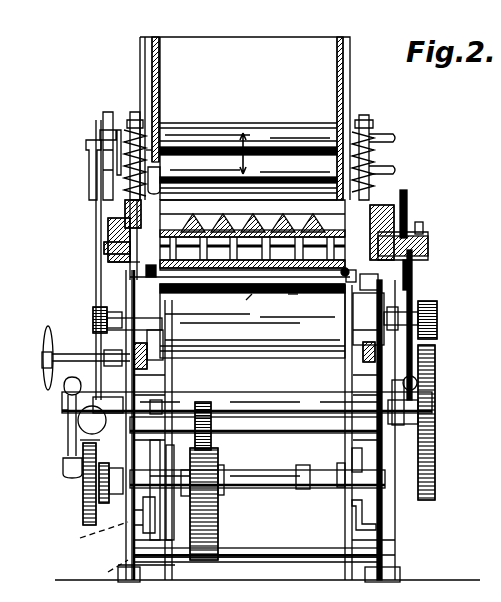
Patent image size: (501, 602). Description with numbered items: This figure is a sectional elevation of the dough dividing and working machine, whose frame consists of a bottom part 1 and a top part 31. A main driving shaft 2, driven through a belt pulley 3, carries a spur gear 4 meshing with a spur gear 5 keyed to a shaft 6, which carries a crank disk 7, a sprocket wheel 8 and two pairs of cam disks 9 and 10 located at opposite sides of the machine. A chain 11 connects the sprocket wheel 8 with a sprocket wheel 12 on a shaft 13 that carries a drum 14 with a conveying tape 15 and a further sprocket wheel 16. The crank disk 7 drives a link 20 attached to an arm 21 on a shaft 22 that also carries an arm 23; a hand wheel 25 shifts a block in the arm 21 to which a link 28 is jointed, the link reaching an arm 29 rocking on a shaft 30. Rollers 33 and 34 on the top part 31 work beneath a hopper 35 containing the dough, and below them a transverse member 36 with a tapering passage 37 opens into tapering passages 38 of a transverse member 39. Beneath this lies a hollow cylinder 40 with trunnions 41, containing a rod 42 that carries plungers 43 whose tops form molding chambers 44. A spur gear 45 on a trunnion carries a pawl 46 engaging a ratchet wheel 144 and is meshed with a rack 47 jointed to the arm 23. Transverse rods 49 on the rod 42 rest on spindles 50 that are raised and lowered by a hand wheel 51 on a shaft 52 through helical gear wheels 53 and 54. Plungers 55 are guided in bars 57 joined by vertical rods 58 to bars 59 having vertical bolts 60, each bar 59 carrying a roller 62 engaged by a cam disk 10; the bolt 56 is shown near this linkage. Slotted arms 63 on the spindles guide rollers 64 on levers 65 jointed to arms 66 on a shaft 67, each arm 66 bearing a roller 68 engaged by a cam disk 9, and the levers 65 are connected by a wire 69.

The bottom part 1 is at (388, 522).
The main driving shaft 2 is at (306, 433).
The belt pulley 3 is at (438, 414).
The spur gear 4 is at (204, 404).
The spur gear 5 is at (218, 460).
The shaft 6 is at (266, 470).
The crank disk 7 is at (83, 510).
The sprocket wheel 8 is at (104, 503).
The cam disks 9 is at (166, 452).
The cam disks 10 is at (150, 478).
The chain 11 is at (92, 444).
The sprocket wheel 12 is at (93, 312).
The shaft 13 is at (414, 310).
The drum 14 is at (310, 356).
The conveying tape 15 is at (292, 294).
The sprocket wheel 16 is at (437, 334).
The link 20 is at (66, 414).
The arm 21 is at (64, 388).
The shaft 22 is at (250, 394).
The arm 23 is at (404, 392).
The hand wheel 25 is at (104, 424).
The link 28 is at (100, 276).
The arm 29 is at (106, 126).
The shaft 30 is at (86, 152).
The top part 31 is at (126, 292).
The roller 33 is at (272, 122).
The roller 34 is at (286, 216).
The hopper 35 is at (282, 46).
The transverse member 36 is at (380, 196).
The tapering passage 37 is at (232, 230).
The tapering passages 38 is at (328, 218).
The transverse member 39 is at (108, 228).
The hollow cylinder 40 is at (222, 268).
The trunnions 41 is at (104, 247).
The rod 42 is at (188, 226).
The plungers 43 is at (220, 228).
The molding chambers 44 is at (263, 232).
The spur gear 45 is at (410, 268).
The pawl 46 is at (424, 226).
The rack 47 is at (408, 196).
The transverse rods 49 is at (108, 264).
The spindles 50 is at (154, 280).
The hand wheel 51 is at (44, 332).
The shaft 52 is at (72, 354).
The helical gear wheels 53 is at (146, 369).
The helical gear wheels 54 is at (368, 362).
The plungers 55 is at (125, 210).
The bolt 56 is at (148, 140).
The bars 57 is at (125, 125).
The vertical rods 58 is at (160, 402).
The bars 59 is at (143, 525).
The vertical bolts 60 is at (108, 571).
The roller 62 is at (92, 538).
The slotted arms 63 is at (378, 282).
The rollers 64 is at (350, 284).
The levers 65 is at (342, 276).
The arms 66 is at (352, 516).
The shaft 67 is at (290, 548).
The roller 68 is at (326, 484).
The wire 69 is at (254, 303).
The ratchet wheel 144 is at (428, 240).